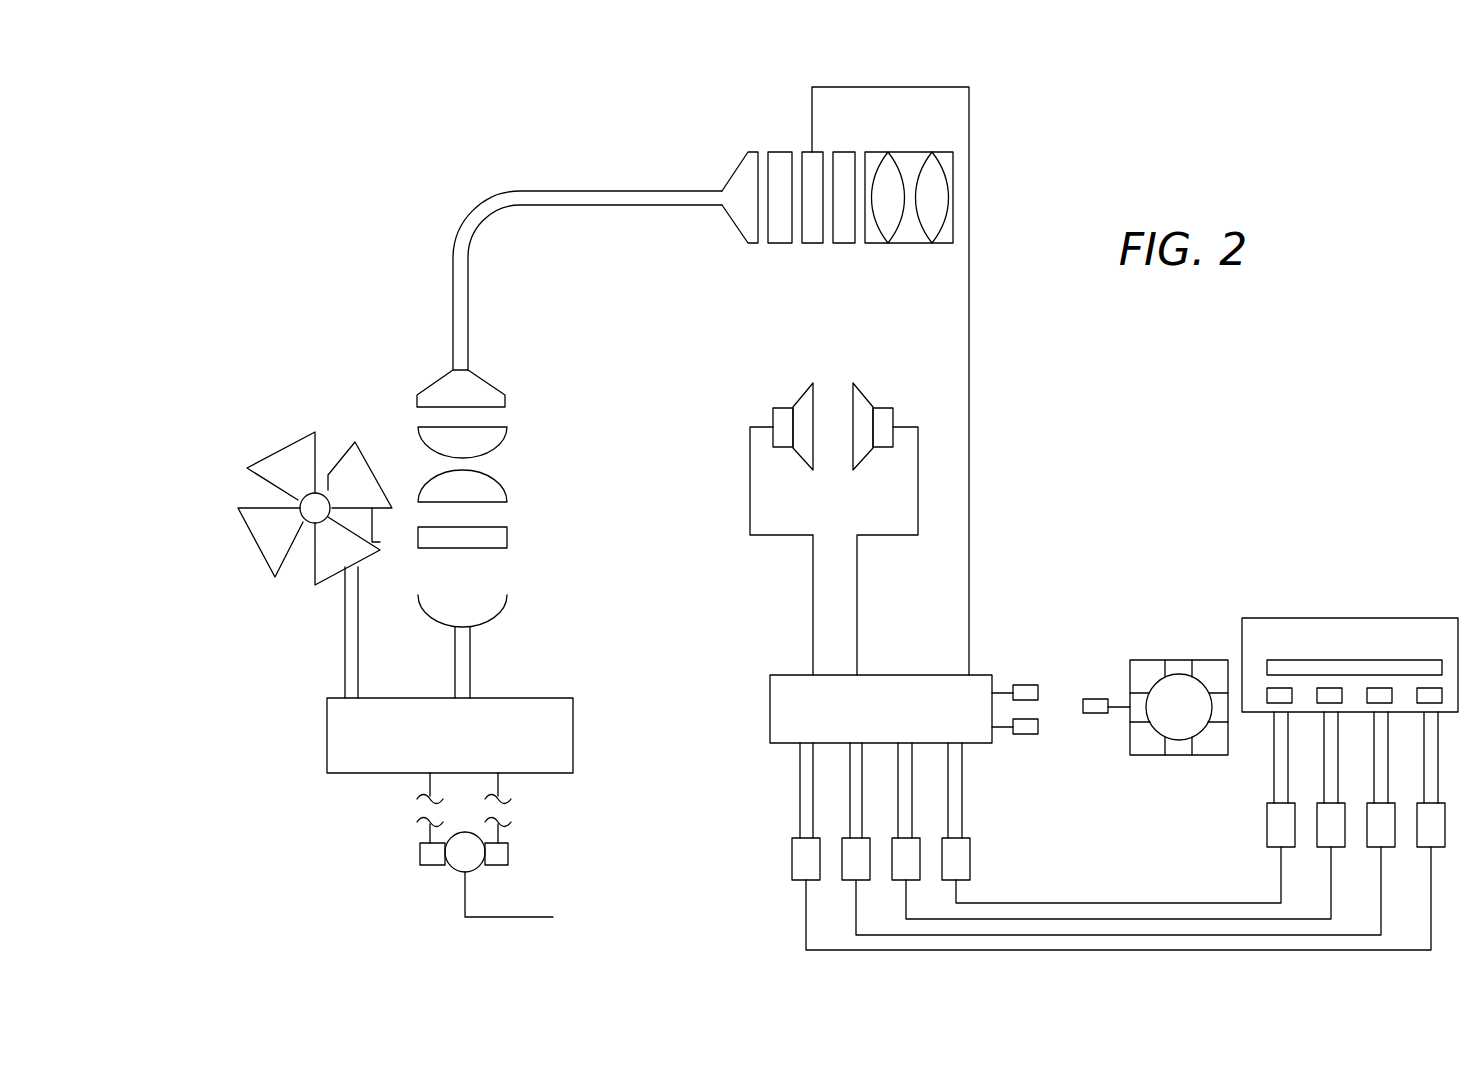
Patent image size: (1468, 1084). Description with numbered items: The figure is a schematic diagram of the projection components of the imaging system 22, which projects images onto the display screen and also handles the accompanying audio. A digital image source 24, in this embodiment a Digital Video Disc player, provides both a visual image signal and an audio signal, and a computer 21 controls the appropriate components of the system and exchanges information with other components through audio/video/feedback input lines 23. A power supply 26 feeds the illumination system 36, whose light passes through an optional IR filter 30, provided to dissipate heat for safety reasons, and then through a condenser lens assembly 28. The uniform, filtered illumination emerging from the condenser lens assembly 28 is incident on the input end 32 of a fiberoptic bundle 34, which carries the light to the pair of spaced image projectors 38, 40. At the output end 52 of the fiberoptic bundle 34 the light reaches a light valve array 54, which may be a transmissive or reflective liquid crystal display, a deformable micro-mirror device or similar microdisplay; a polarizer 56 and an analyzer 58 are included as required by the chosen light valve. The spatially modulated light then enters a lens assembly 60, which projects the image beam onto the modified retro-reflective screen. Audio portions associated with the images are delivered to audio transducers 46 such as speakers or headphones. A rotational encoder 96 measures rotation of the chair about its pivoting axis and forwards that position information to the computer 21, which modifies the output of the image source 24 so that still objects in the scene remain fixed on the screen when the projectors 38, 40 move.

The computer 21 is at (887, 675).
The imaging system 22 is at (217, 167).
The audio/video/feedback input lines 23 is at (970, 855).
The digital image source 24 is at (1352, 618).
The power supply 26 is at (508, 853).
The condenser lens assembly 28 is at (511, 420).
The IR filter 30 is at (507, 534).
The input end of fiberoptic bundle 32 is at (488, 378).
The fiberoptic bundle 34 is at (483, 228).
The illumination system 36 is at (470, 660).
The image projector 38 is at (812, 381).
The image projector 40 is at (812, 381).
The audio transducers 46 is at (802, 395).
The output end of fiberoptic bundle 52 is at (722, 207).
The light valve array 54 is at (806, 243).
The polarizer 56 is at (774, 152).
The analyzer 58 is at (848, 152).
The lens assembly 60 is at (918, 152).
The rotational encoder 96 is at (1173, 660).